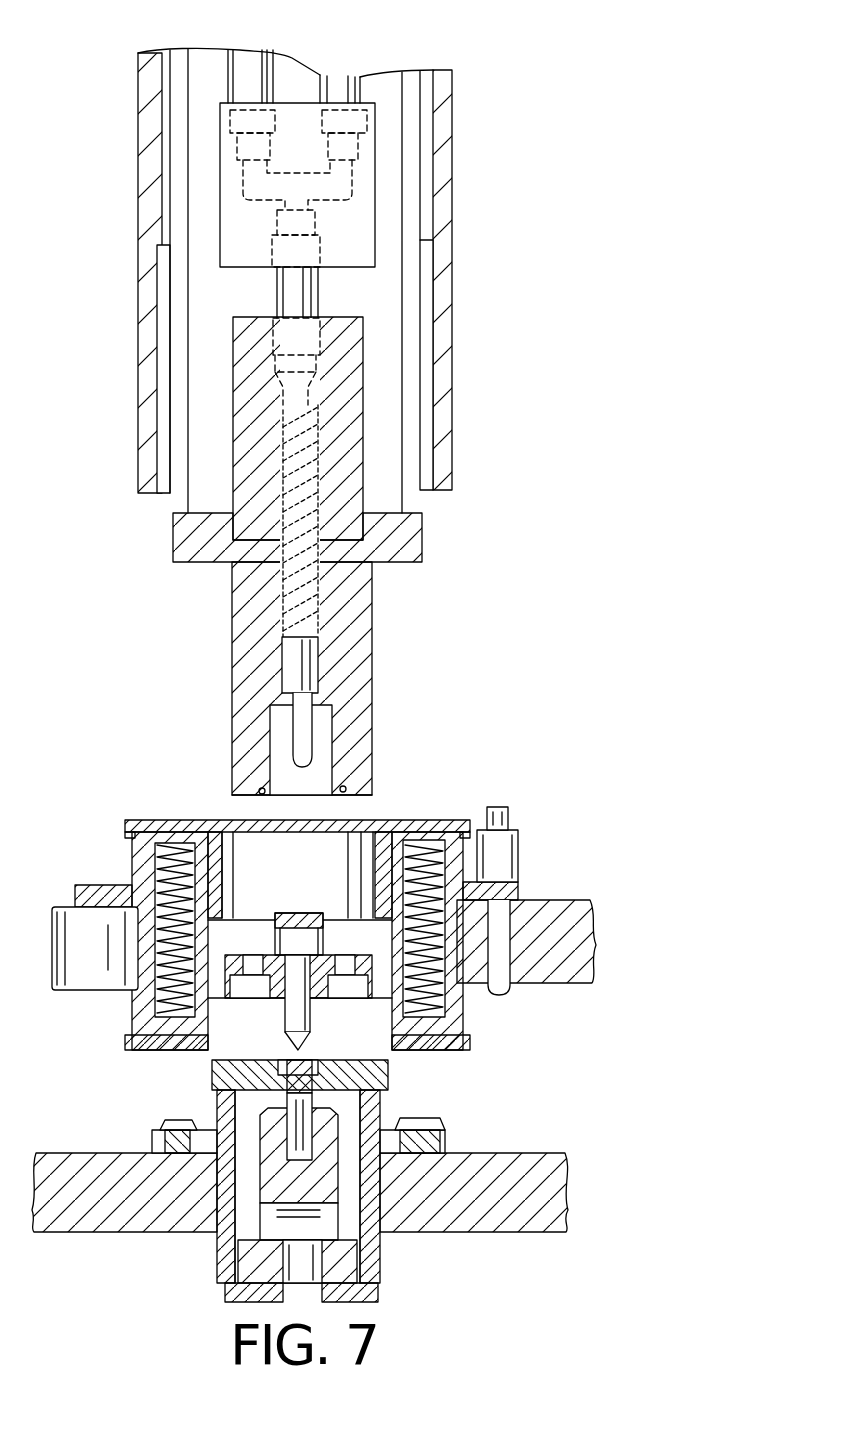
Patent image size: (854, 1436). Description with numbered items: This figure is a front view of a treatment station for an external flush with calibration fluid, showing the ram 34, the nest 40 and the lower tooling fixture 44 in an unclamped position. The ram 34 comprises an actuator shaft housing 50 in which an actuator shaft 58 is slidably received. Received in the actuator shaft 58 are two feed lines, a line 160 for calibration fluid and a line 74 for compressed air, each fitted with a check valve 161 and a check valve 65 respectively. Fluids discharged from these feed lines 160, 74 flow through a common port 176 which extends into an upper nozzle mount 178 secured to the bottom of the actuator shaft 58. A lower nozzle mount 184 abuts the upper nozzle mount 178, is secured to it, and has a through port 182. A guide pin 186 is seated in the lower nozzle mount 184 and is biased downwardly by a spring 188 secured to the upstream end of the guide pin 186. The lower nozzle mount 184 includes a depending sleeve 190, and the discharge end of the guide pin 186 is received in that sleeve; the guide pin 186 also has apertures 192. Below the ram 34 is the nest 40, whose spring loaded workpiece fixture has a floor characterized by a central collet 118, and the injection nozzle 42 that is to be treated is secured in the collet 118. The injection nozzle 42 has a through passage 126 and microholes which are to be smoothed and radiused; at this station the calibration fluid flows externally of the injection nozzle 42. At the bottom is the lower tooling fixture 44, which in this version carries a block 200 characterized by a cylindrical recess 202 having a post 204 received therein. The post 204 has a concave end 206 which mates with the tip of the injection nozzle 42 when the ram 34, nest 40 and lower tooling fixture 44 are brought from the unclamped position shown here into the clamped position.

The ram 34 is at (522, 406).
The nest 40 is at (482, 786).
The injection nozzle 42 is at (271, 935).
The lower tooling fixture 44 is at (409, 1098).
The actuator shaft housing 50 is at (453, 385).
The actuator shaft 58 is at (413, 258).
The check valve 65 is at (355, 125).
The line for compressed air 74 is at (343, 80).
The collet 118 is at (240, 989).
The through passage 126 is at (298, 915).
The line for calibration fluid 160 is at (252, 64).
The check valve 161 is at (225, 134).
The common port 176 is at (311, 311).
The upper nozzle mount 178 is at (365, 365).
The through port 182 is at (335, 496).
The lower nozzle mount 184 is at (392, 631).
The guide pin 186 is at (293, 662).
The spring 188 is at (285, 590).
The depending sleeve 190 is at (373, 771).
The apertures 192 is at (315, 758).
The block 200 is at (338, 1150).
The cylindrical recess 202 is at (288, 1140).
The post 204 is at (300, 1062).
The concave end 206 is at (303, 1058).